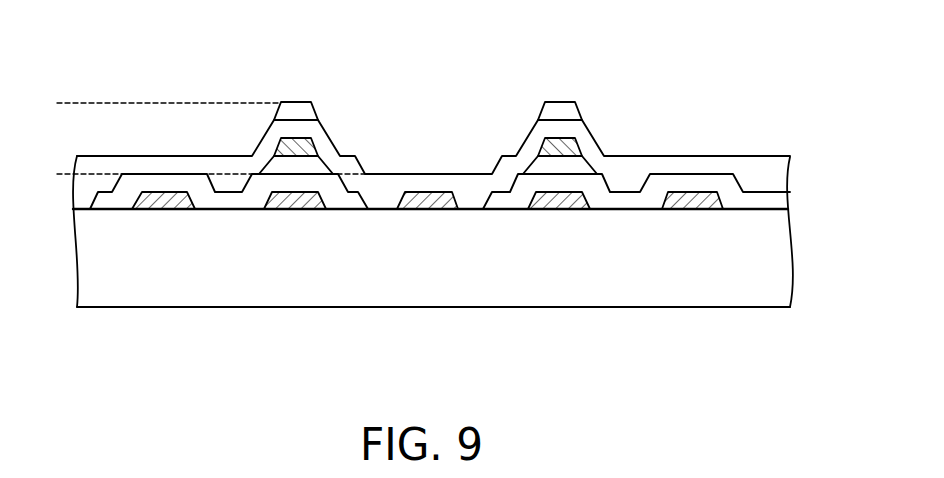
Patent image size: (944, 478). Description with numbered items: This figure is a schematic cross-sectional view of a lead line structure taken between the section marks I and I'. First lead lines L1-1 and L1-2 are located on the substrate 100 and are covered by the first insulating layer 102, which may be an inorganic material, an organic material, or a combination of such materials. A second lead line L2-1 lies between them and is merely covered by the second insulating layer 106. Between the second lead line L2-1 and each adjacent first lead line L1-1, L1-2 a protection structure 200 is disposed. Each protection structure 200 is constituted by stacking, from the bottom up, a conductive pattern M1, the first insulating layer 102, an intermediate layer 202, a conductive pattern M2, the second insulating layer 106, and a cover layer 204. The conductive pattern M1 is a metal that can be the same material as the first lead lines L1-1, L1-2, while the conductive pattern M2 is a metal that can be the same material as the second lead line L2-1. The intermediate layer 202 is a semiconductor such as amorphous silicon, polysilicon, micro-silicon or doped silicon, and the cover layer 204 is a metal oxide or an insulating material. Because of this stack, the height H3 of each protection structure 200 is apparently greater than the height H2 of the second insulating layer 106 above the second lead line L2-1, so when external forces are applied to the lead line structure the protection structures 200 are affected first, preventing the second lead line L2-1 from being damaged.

The substrate 100 is at (783, 236).
The first insulating layer 102 is at (333, 185).
The second insulating layer 106 is at (265, 146).
The protection structure 200 is at (197, 42).
The intermediate layer 202 is at (310, 165).
The cover layer 204 is at (277, 107).
The conductive pattern M1 is at (322, 202).
The conductive pattern M2 is at (295, 148).
The first lead line L1-1 is at (160, 209).
The second lead line L2-1 is at (428, 209).
The first lead line L1-2 is at (688, 209).
The height of protection structure H3 is at (153, 104).
The height of second insulating layer H2 is at (196, 179).
The section line mark I is at (71, 336).
The section line mark I' is at (790, 336).